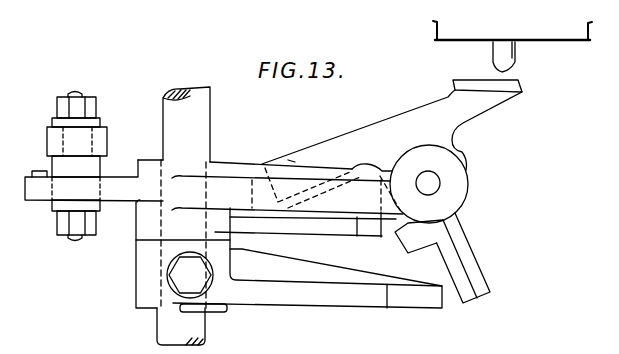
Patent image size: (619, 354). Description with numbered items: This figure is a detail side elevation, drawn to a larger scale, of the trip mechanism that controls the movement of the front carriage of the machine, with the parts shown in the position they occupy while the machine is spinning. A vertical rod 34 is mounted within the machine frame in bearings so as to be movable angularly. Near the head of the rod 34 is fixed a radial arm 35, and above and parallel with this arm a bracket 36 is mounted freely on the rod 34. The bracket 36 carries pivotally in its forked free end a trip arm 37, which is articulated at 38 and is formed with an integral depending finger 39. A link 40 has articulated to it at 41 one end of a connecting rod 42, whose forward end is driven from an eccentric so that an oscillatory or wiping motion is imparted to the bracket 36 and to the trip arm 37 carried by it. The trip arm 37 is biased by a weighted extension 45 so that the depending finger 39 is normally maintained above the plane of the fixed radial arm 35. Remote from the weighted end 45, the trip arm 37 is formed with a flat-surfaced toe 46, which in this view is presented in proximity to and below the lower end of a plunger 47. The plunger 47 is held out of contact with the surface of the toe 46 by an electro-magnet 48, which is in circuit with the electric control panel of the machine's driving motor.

The vertical rod 34 is at (197, 322).
The radial arm 35 is at (321, 300).
The bracket 36 is at (241, 190).
The trip arm 37 is at (397, 127).
The articulation 38 is at (428, 183).
The depending finger 39 is at (462, 263).
The link 40 is at (115, 195).
The articulation 41 is at (83, 95).
The connecting rod 42 is at (99, 138).
The weighted extension 45 is at (288, 160).
The flat-surfaced toe 46 is at (473, 82).
The plunger 47 is at (507, 59).
The electro-magnet 48 is at (550, 37).